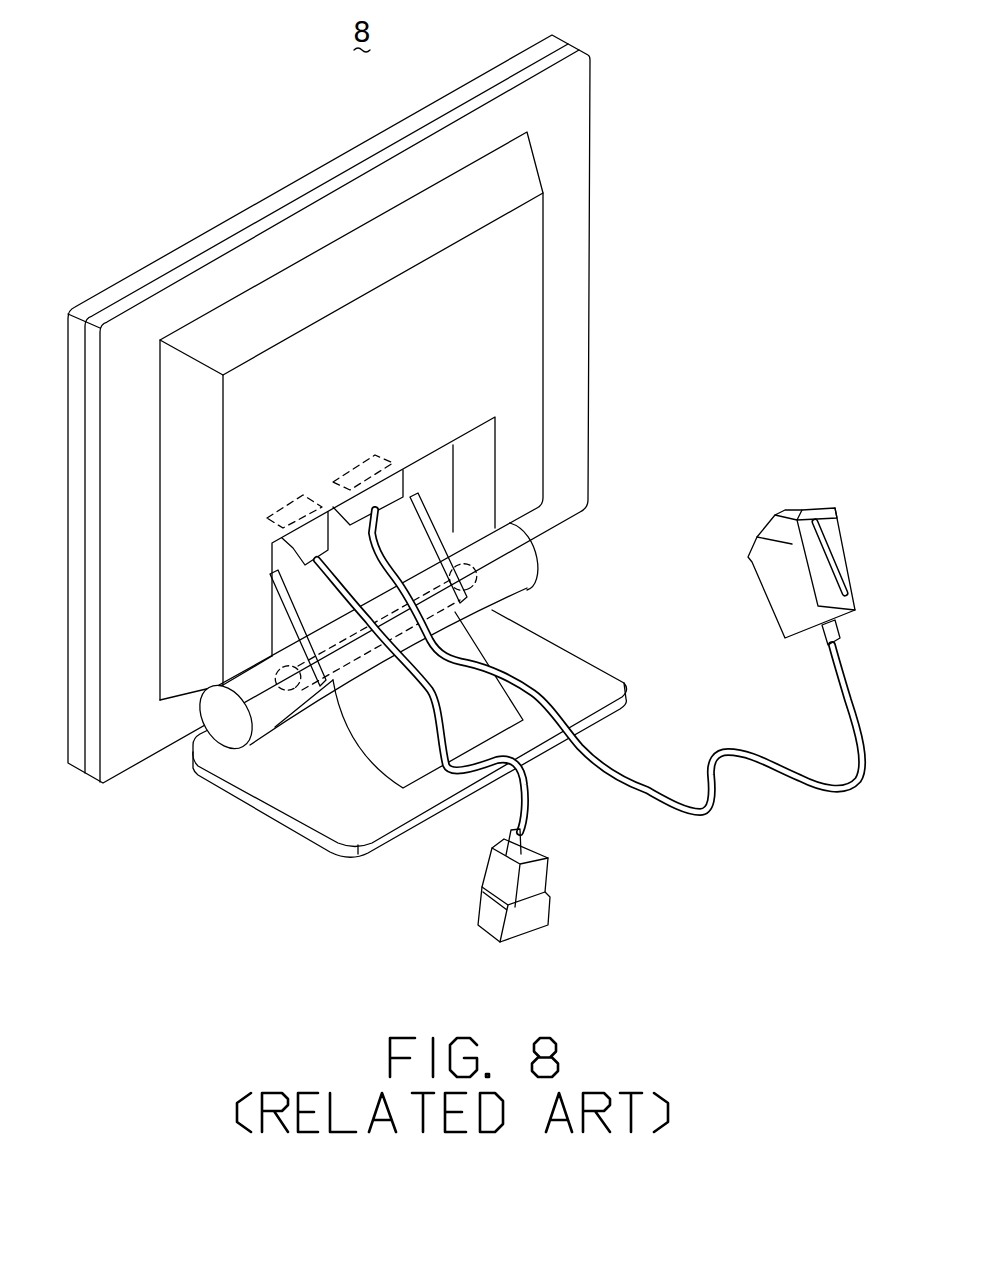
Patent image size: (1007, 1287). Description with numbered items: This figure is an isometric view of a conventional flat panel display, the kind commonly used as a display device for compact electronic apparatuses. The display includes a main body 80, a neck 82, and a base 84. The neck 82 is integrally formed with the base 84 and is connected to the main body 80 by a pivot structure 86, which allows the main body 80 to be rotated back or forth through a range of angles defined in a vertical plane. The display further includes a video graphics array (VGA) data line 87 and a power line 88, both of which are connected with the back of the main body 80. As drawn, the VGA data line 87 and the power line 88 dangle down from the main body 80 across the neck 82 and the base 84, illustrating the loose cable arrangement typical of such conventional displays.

The main body 80 is at (562, 175).
The neck 82 is at (400, 757).
The base 84 is at (348, 805).
The pivot structure 86 is at (475, 578).
The video graphics array (VGA) data line 87 is at (745, 752).
The power line 88 is at (443, 560).